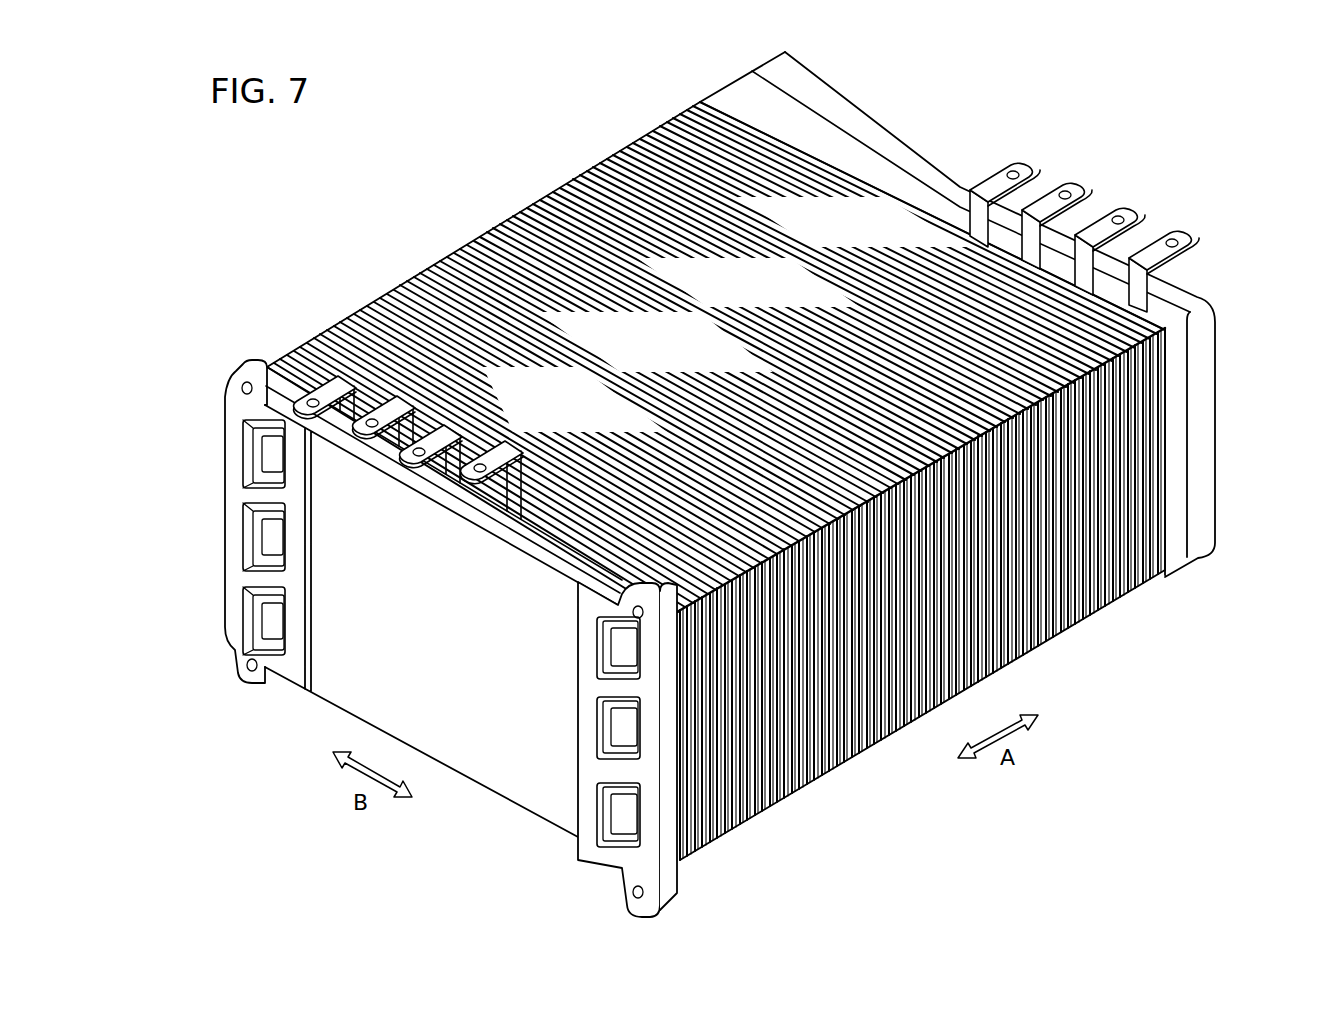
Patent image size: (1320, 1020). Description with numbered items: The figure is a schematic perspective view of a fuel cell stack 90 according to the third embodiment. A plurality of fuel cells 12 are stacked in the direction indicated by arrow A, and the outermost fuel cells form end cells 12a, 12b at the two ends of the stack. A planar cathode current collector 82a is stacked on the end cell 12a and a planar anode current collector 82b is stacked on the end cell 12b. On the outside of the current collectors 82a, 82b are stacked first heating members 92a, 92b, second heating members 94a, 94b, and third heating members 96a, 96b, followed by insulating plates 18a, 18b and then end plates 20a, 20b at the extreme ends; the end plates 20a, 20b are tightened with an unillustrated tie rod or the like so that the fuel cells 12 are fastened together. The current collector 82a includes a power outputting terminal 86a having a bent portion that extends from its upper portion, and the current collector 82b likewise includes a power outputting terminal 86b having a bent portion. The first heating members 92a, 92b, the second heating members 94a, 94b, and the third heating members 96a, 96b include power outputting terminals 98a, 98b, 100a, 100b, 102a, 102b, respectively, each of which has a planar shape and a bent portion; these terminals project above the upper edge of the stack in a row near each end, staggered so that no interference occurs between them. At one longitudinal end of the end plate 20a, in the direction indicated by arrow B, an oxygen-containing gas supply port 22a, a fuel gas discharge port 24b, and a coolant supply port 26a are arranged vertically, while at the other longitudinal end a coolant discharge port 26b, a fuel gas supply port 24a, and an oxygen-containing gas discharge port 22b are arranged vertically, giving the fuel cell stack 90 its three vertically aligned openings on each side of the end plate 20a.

The fuel cells 12 is at (494, 220).
The end cell 12a is at (722, 855).
The end cell 12b is at (1142, 570).
The insulating plate 18a is at (520, 523).
The insulating plate 18b is at (858, 132).
The end plate 20a is at (470, 752).
The end plate 20b is at (915, 113).
The oxygen-containing gas supply port 22a is at (258, 452).
The oxygen-containing gas discharge port 22b is at (614, 815).
The fuel gas supply port 24a is at (616, 727).
The fuel gas discharge port 24b is at (260, 532).
The coolant supply port 26a is at (262, 614).
The coolant discharge port 26b is at (610, 640).
The cathode current collector 82a is at (524, 486).
The anode current collector 82b is at (1012, 160).
The power outputting terminal 86a is at (488, 440).
The power outputting terminal 86b is at (961, 178).
The fuel cell stack 90 is at (200, 192).
The first heating member 92a is at (418, 462).
The first heating member 92b is at (1070, 182).
The second heating member 94a is at (366, 432).
The second heating member 94b is at (1132, 218).
The third heating member 96a is at (298, 396).
The third heating member 96b is at (1182, 237).
The power outputting terminal 98a is at (455, 443).
The power outputting terminal 98b is at (1057, 195).
The power outputting terminal 100a is at (372, 408).
The power outputting terminal 100b is at (1116, 213).
The power outputting terminal 102a is at (332, 388).
The power outputting terminal 102b is at (1166, 235).